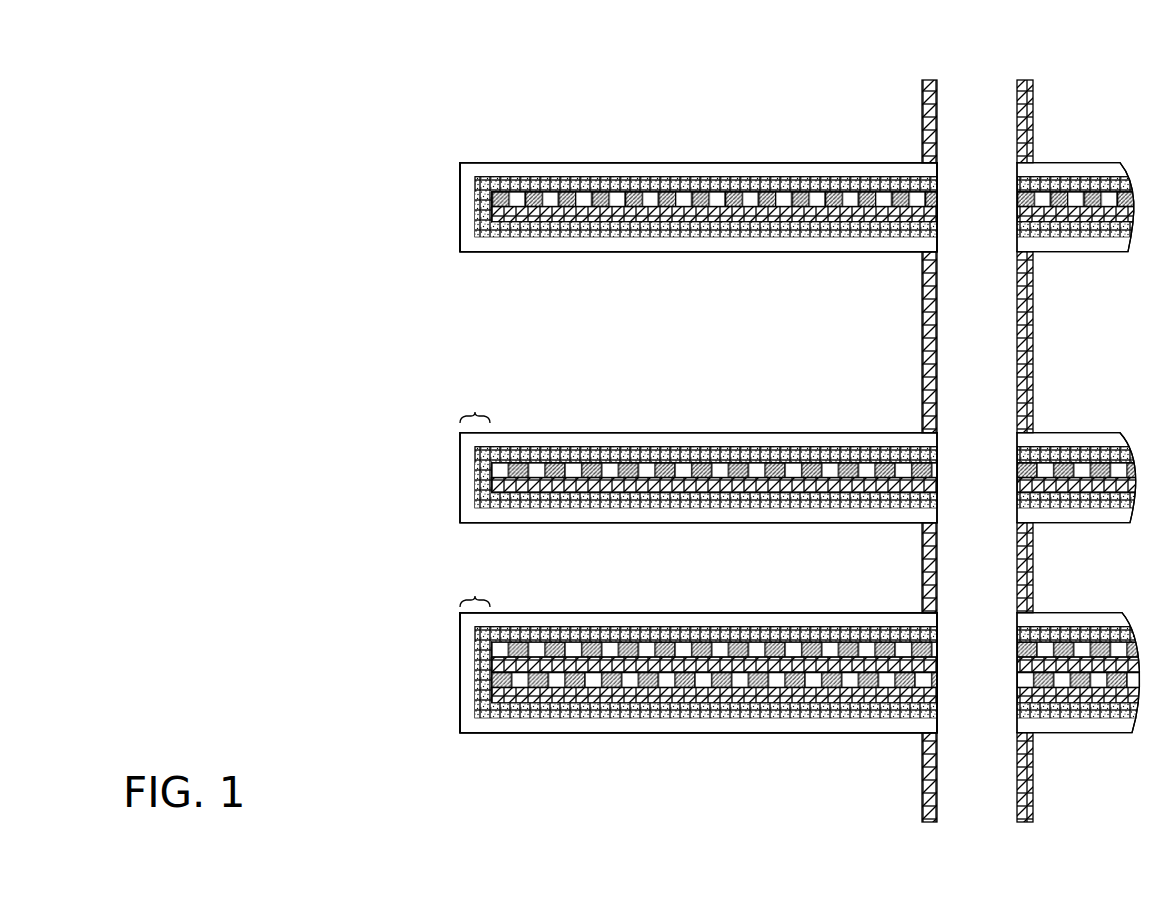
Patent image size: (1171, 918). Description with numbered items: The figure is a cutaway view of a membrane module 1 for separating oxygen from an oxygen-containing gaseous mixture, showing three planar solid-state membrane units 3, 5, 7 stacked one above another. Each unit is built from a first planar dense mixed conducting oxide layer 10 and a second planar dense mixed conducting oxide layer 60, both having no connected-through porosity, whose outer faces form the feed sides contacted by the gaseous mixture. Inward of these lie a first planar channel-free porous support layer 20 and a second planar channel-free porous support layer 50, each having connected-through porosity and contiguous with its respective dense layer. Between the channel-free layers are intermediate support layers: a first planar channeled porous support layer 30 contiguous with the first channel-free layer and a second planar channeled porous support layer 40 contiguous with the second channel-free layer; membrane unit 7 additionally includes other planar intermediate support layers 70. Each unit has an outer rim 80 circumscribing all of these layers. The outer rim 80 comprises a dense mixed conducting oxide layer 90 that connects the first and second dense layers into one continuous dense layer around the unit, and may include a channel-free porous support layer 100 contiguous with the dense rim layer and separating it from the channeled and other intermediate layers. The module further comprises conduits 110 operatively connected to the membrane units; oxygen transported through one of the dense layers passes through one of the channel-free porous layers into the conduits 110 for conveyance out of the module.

The membrane module 1 is at (368, 114).
The planar solid-state membrane unit 3 is at (344, 210).
The planar solid-state membrane unit 5 is at (344, 477).
The planar solid-state membrane unit 7 is at (344, 672).
The first planar dense mixed conducting oxide layer 10 is at (547, 170).
The first planar channel-free porous support layer 20 is at (625, 183).
The first planar channeled porous support layer 30 is at (695, 200).
The second planar channeled porous support layer 40 is at (697, 212).
The second planar channel-free porous support layer 50 is at (629, 232).
The second planar dense mixed conducting oxide layer 60 is at (557, 245).
The other planar intermediate support layers 70 is at (760, 668).
The outer rim 80 is at (474, 495).
The dense mixed conducting oxide layer 90 is at (470, 455).
The channel-free porous support layer 100 is at (480, 487).
The conduits 110 is at (928, 332).